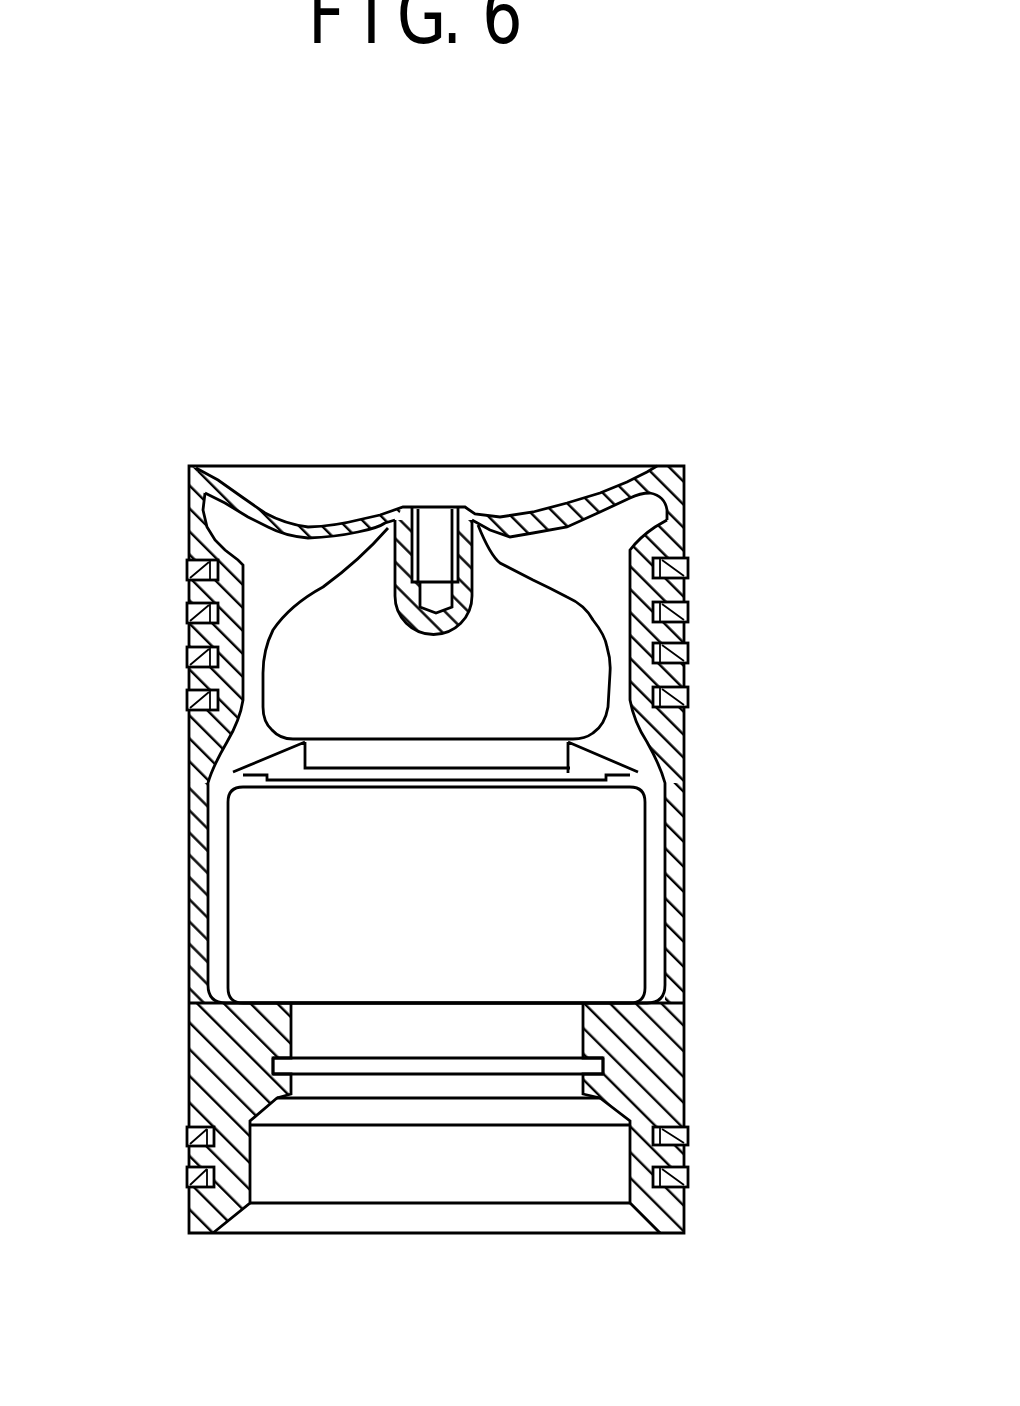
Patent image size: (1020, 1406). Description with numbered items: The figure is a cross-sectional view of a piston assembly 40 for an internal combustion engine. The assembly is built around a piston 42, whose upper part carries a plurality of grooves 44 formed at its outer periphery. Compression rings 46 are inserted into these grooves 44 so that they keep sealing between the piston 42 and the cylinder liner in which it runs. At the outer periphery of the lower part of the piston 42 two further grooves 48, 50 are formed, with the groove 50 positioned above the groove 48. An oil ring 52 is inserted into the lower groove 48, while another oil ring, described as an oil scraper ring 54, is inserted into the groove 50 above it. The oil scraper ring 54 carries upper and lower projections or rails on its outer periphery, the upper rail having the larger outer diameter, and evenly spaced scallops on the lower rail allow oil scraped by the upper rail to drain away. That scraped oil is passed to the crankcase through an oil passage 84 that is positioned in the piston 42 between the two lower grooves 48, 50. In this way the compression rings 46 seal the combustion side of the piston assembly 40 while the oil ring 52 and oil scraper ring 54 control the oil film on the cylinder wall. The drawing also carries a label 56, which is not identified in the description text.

The piston assembly 40 is at (331, 448).
The piston 42 is at (555, 500).
The grooves 44 is at (687, 527).
The compression rings 46 is at (187, 703).
The groove 48 is at (680, 1158).
The groove 50 is at (633, 1135).
The oil ring 52 is at (690, 1172).
The oil scraper ring 54 is at (690, 1137).
The retainer plate 56 is at (676, 1080).
The oil passage 84 is at (189, 1233).